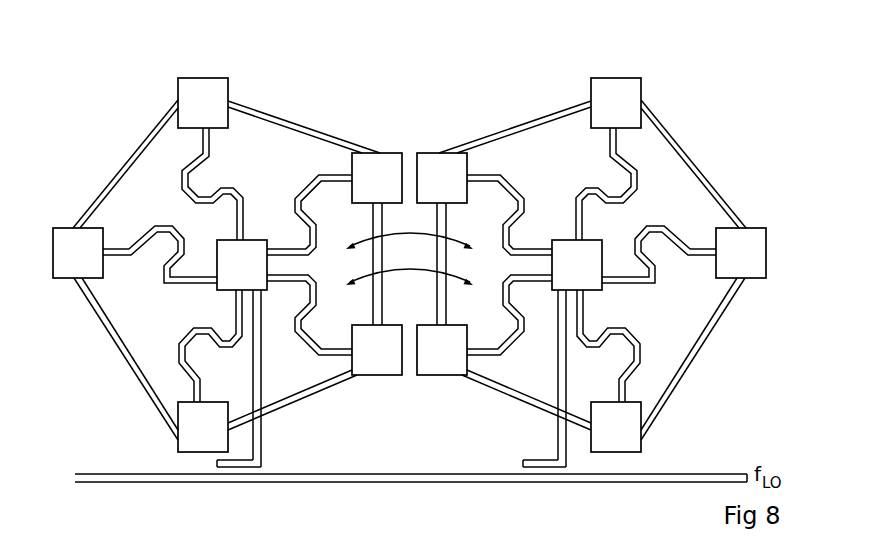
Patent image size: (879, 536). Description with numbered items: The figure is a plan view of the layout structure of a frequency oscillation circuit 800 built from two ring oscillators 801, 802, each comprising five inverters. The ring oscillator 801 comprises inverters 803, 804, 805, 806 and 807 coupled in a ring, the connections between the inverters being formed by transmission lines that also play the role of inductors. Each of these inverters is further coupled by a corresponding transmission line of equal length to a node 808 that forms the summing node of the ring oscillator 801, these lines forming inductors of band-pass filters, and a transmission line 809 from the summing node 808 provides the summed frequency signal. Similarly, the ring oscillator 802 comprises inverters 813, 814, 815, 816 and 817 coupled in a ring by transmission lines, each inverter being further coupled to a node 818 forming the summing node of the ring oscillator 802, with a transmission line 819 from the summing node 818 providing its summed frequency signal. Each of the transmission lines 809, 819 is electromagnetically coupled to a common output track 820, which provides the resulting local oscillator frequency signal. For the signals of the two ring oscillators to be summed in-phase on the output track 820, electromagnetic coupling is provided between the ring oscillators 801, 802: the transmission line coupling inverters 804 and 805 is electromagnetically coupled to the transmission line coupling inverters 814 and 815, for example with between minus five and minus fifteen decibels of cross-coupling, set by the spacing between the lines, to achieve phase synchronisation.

The frequency oscillation circuit 800 is at (716, 95).
The ring oscillator 801 is at (301, 90).
The ring oscillator 802 is at (487, 90).
The inverter 803 is at (203, 90).
The inverter 804 is at (386, 163).
The inverter 805 is at (384, 365).
The inverter 806 is at (190, 433).
The inverter 807 is at (63, 235).
The node 808 is at (253, 247).
The transmission line 809 is at (258, 443).
The inverter 813 is at (612, 88).
The inverter 814 is at (427, 162).
The inverter 815 is at (436, 365).
The inverter 816 is at (634, 440).
The inverter 817 is at (750, 235).
The node 818 is at (597, 247).
The transmission line 819 is at (558, 440).
The common output track 820 is at (410, 479).